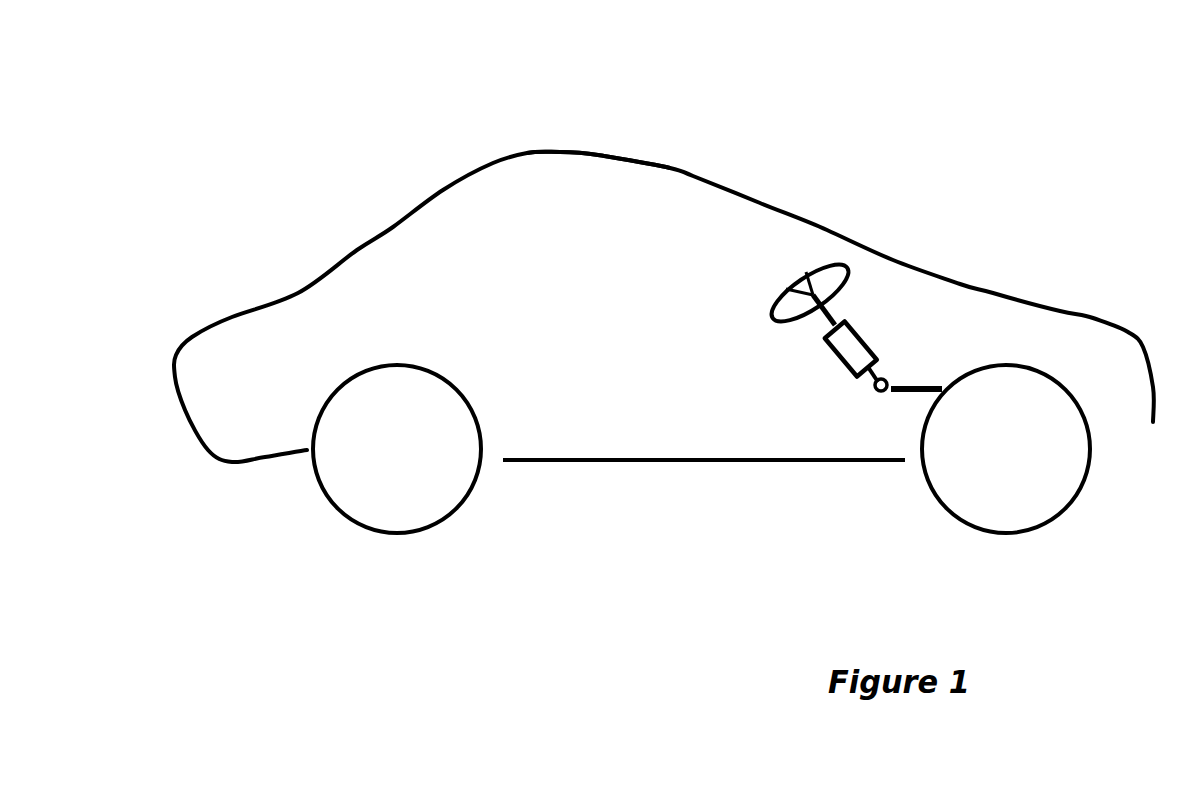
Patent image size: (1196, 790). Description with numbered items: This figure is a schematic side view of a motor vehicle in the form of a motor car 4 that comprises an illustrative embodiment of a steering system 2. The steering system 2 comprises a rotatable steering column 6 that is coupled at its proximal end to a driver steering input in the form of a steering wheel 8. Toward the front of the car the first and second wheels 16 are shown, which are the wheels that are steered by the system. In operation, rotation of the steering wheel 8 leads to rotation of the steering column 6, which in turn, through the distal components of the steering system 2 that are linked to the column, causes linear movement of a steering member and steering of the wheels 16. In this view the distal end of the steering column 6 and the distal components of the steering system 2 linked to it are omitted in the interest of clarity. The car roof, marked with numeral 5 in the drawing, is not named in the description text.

The steering system 2 is at (965, 313).
The motor car 4 is at (866, 222).
The roof 5 is at (598, 155).
The steering column 6 is at (892, 317).
The steering wheel 8 is at (823, 250).
The first and second wheels 16 is at (975, 493).